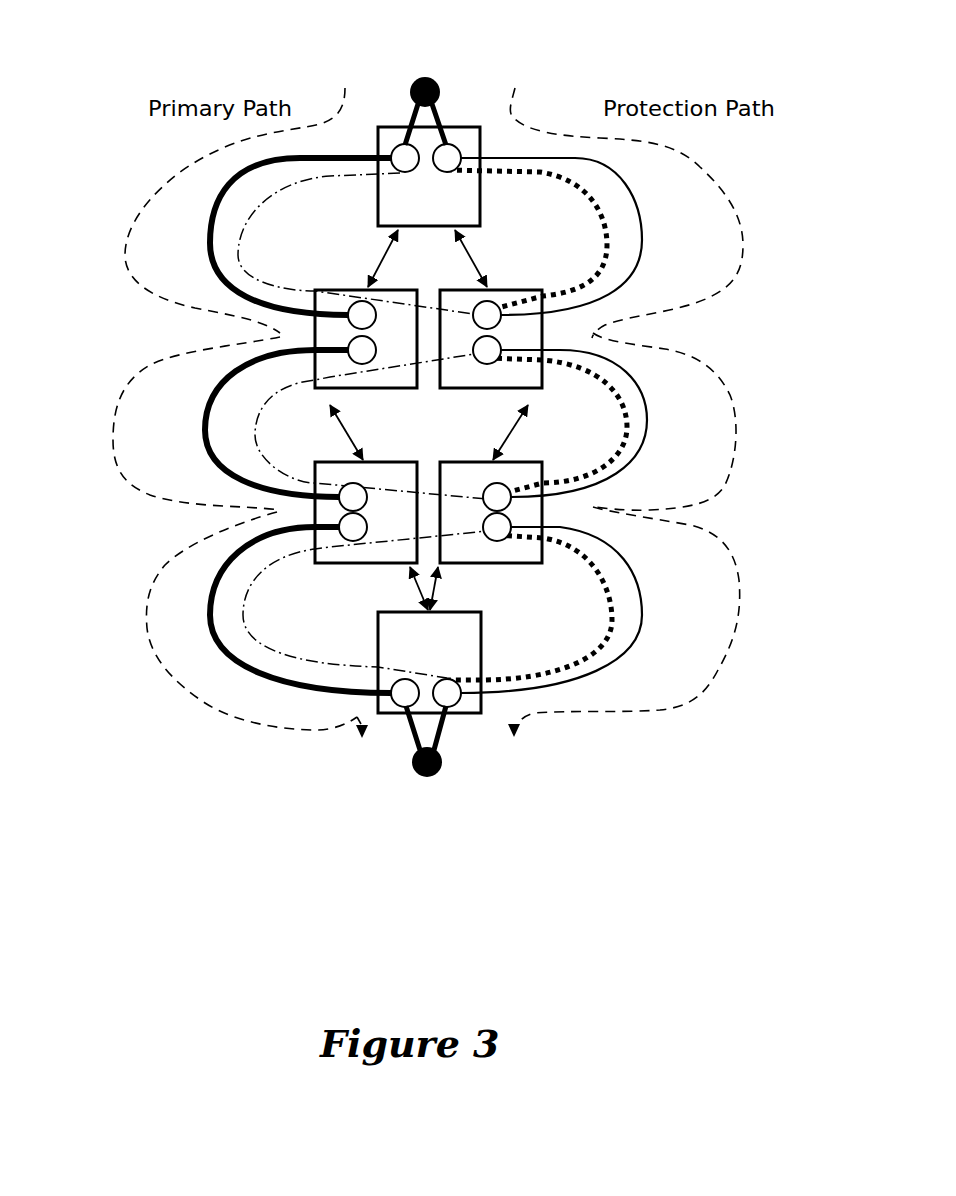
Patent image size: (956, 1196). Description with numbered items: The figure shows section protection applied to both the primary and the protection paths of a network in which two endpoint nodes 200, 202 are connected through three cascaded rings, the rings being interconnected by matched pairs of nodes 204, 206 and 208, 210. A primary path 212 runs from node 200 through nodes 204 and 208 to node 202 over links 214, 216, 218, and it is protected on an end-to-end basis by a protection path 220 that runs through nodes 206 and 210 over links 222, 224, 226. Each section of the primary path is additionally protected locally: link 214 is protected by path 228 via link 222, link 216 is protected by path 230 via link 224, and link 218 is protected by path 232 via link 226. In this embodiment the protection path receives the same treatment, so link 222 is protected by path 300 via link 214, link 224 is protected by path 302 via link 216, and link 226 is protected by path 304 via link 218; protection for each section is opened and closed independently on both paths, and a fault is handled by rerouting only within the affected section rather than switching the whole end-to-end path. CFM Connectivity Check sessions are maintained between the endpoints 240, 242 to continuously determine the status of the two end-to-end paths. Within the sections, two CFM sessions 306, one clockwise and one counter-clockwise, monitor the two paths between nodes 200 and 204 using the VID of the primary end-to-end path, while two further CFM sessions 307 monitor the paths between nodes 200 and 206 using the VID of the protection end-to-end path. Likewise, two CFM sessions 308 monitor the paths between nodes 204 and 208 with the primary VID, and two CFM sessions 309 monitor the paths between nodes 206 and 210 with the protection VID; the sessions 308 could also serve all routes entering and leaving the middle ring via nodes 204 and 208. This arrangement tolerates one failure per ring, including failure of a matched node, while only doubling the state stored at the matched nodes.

The endpoint node 200 is at (448, 214).
The endpoint node 202 is at (448, 662).
The matched-pair node 204 is at (366, 354).
The matched-pair node 206 is at (491, 354).
The matched-pair node 208 is at (366, 527).
The matched-pair node 210 is at (491, 527).
The primary path 212 is at (240, 413).
The link 214 is at (274, 236).
The link 216 is at (253, 423).
The link 218 is at (276, 610).
The protection path 220 is at (625, 412).
The link 222 is at (574, 236).
The link 224 is at (600, 423).
The link 226 is at (575, 610).
The section protection path 228 is at (527, 240).
The section protection path 230 is at (557, 426).
The section protection path 232 is at (529, 607).
The endpoint 240 is at (425, 78).
The endpoint 242 is at (431, 777).
The section protection path 300 is at (362, 244).
The section protection path 302 is at (376, 426).
The section protection path 304 is at (370, 604).
The CFM sessions 306 is at (365, 258).
The CFM sessions 307 is at (489, 258).
The CFM sessions 308 is at (365, 432).
The CFM sessions 309 is at (492, 432).